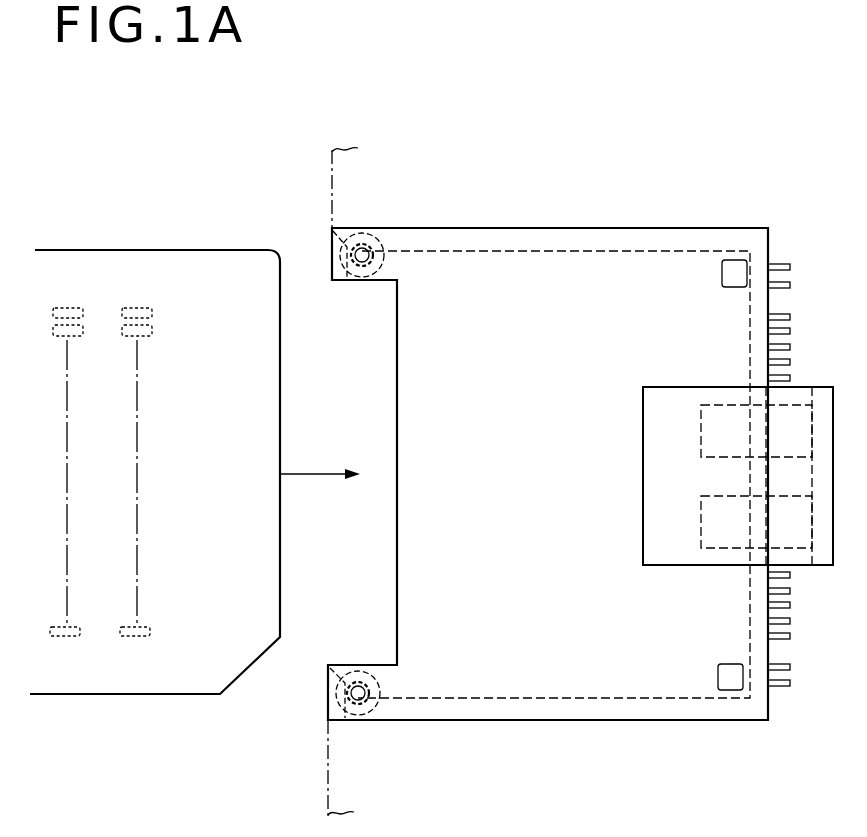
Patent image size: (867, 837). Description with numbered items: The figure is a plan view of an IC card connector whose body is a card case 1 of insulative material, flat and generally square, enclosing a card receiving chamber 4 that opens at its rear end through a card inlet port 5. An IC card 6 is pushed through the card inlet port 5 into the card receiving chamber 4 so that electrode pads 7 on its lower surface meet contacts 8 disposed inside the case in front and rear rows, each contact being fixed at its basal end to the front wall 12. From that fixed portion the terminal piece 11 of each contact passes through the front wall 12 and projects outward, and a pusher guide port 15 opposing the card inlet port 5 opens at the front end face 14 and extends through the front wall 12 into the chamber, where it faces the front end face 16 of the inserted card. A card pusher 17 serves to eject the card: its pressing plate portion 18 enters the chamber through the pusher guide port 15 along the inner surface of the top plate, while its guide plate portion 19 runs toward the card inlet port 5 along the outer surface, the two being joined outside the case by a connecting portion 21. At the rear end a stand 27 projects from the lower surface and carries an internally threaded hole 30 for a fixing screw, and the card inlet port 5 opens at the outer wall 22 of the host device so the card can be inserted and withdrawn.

The card case 1 is at (640, 230).
The card receiving chamber 4 is at (520, 403).
The card inlet port 5 is at (392, 536).
The IC card 6 is at (175, 250).
The electrode pads 7 is at (70, 308).
The contacts 8 is at (778, 684).
The terminal piece 11 is at (775, 267).
The front wall 12 is at (765, 303).
The front end face 14 is at (775, 340).
The pusher guide port 15 is at (780, 375).
The front end face of IC card 16 is at (280, 420).
The card pusher 17 is at (648, 386).
The pressing plate portion 18 is at (718, 404).
The guide plate portion 19 is at (672, 475).
The connecting portion 21 is at (826, 508).
The outer wall 22 is at (323, 783).
The rear stand 27 is at (385, 708).
The internally threaded hole 30 is at (355, 712).